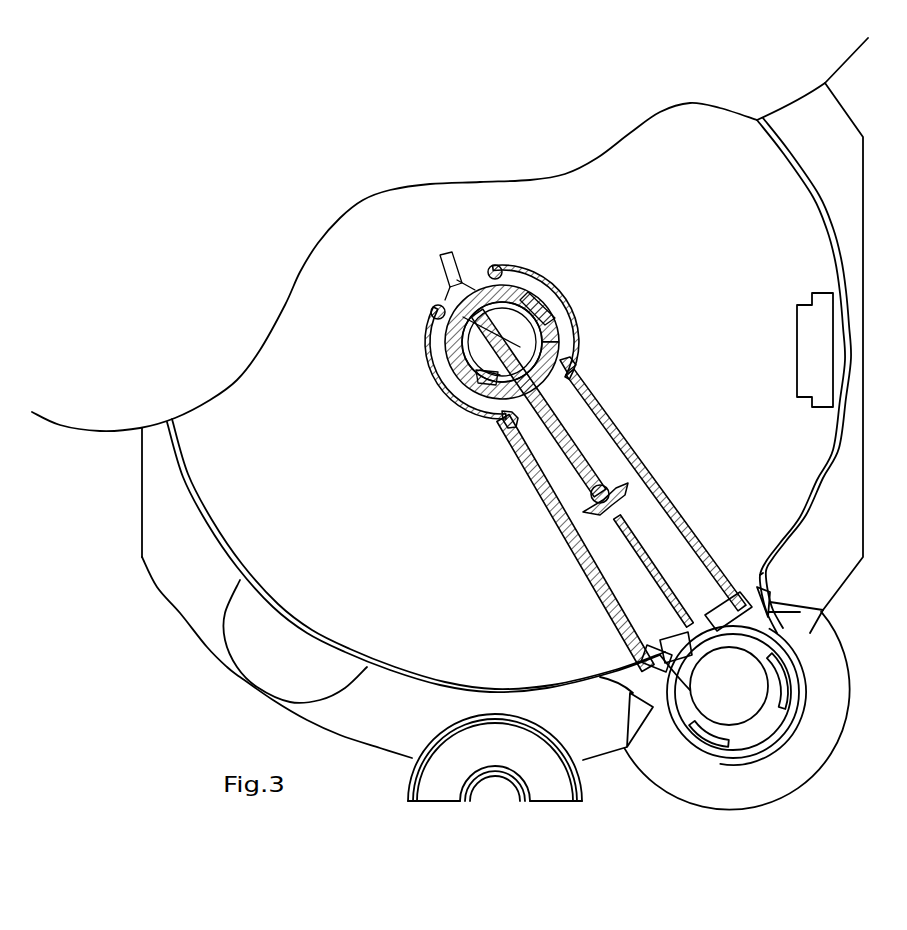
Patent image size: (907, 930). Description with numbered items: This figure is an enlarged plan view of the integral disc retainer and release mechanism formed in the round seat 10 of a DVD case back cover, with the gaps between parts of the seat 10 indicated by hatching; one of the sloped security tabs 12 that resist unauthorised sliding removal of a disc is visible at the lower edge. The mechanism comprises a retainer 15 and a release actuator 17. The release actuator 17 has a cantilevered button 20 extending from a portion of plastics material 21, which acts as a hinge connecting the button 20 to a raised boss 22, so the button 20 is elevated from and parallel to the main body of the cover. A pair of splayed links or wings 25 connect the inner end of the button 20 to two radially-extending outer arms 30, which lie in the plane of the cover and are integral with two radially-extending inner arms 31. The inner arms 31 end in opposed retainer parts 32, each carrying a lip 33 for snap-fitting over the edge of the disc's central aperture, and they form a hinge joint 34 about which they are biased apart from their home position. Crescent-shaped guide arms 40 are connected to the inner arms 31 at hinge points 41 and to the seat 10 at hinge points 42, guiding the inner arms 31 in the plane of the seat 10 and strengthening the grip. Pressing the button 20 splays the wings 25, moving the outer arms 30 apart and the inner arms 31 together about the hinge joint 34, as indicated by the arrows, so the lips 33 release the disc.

The seat 10 is at (830, 478).
The security tab 12 is at (550, 790).
The retainer 15 is at (356, 347).
The release actuator 17 is at (830, 805).
The button 20 is at (760, 647).
The portion of plastics material 21 is at (770, 750).
The raised boss 22 is at (780, 762).
The splayed links or wings 25 is at (657, 637).
The outer arms 30 is at (653, 537).
The inner arms 31 is at (602, 443).
The retainer part 32 is at (520, 323).
The lip 33 is at (567, 298).
The hinge joint 34 is at (603, 505).
The guide arm 40 is at (578, 330).
The hinge point 41 is at (580, 348).
The hinge point 42 is at (473, 283).